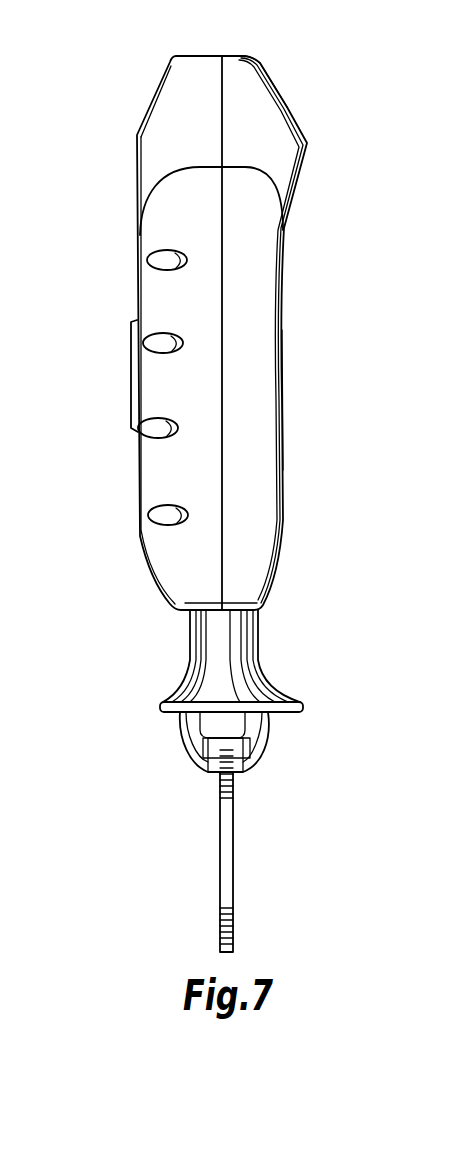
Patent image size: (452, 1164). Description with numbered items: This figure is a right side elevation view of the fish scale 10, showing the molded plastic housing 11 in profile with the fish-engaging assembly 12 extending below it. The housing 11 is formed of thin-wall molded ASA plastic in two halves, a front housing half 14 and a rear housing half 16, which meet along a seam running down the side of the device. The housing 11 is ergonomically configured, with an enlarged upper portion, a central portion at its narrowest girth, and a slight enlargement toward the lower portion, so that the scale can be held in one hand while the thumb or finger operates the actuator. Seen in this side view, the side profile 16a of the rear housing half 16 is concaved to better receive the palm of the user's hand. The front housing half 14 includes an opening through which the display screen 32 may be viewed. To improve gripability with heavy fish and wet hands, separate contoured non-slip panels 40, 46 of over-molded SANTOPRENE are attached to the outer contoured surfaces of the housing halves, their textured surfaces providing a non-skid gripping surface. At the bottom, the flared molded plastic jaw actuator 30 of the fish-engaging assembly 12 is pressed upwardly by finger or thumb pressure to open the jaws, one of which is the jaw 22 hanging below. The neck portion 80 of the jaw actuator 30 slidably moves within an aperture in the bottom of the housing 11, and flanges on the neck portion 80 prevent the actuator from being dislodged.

The fish scale 10 is at (332, 243).
The molded plastic housing 11 is at (303, 102).
The fish-engaging assembly 12 is at (302, 677).
The front housing half 14 is at (188, 132).
The rear housing half 16 is at (243, 107).
The side profile 16a is at (277, 395).
The jaw 22 is at (233, 853).
The jaw actuator 30 is at (303, 703).
The display screen 32 is at (130, 416).
The contoured panel 40 is at (175, 303).
The contoured panel 46 is at (247, 350).
The neck portion 80 is at (262, 632).